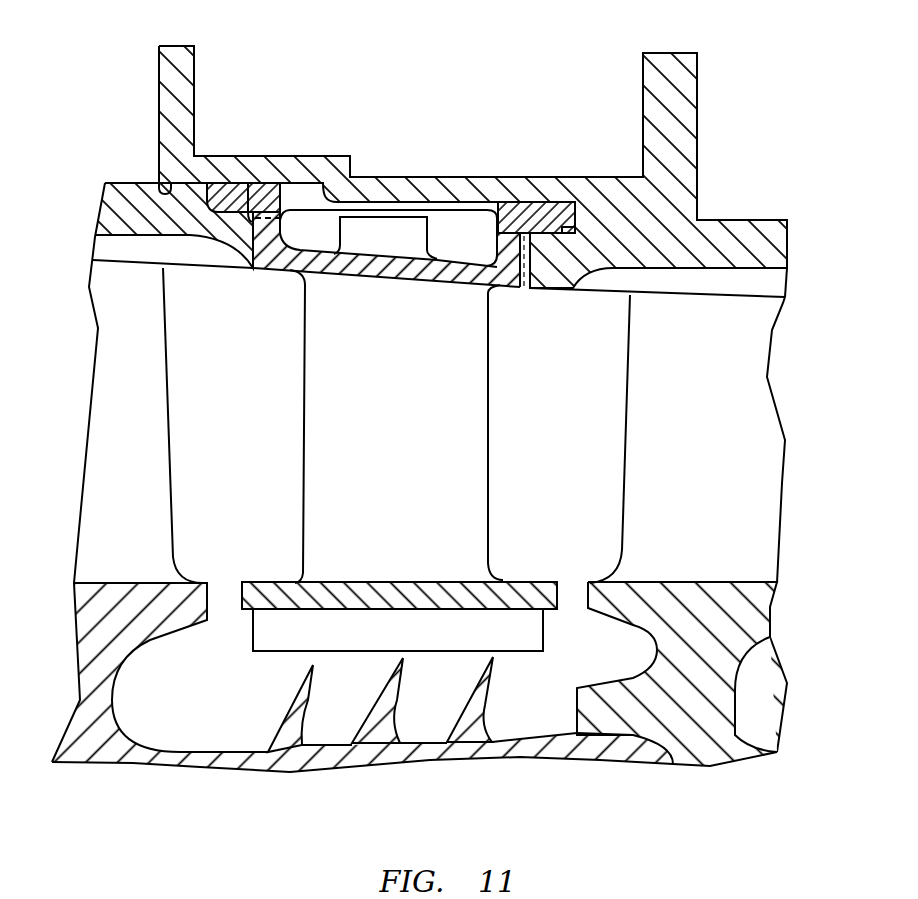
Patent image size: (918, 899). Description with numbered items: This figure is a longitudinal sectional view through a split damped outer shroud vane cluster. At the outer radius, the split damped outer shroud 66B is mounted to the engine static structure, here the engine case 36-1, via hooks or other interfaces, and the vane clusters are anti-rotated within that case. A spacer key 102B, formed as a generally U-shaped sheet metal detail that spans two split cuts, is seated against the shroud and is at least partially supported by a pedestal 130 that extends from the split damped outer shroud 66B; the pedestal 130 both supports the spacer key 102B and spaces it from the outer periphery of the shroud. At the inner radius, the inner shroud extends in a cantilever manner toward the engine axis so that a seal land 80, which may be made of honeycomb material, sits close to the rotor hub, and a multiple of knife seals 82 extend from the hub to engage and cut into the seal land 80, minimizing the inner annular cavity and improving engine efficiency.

The engine case 36-1 is at (676, 187).
The pedestal 130 is at (399, 225).
The spacer key 102B is at (465, 215).
The split damped outer shroud 66B is at (513, 265).
The seal land 80 is at (522, 632).
The knife seals 82 is at (470, 722).